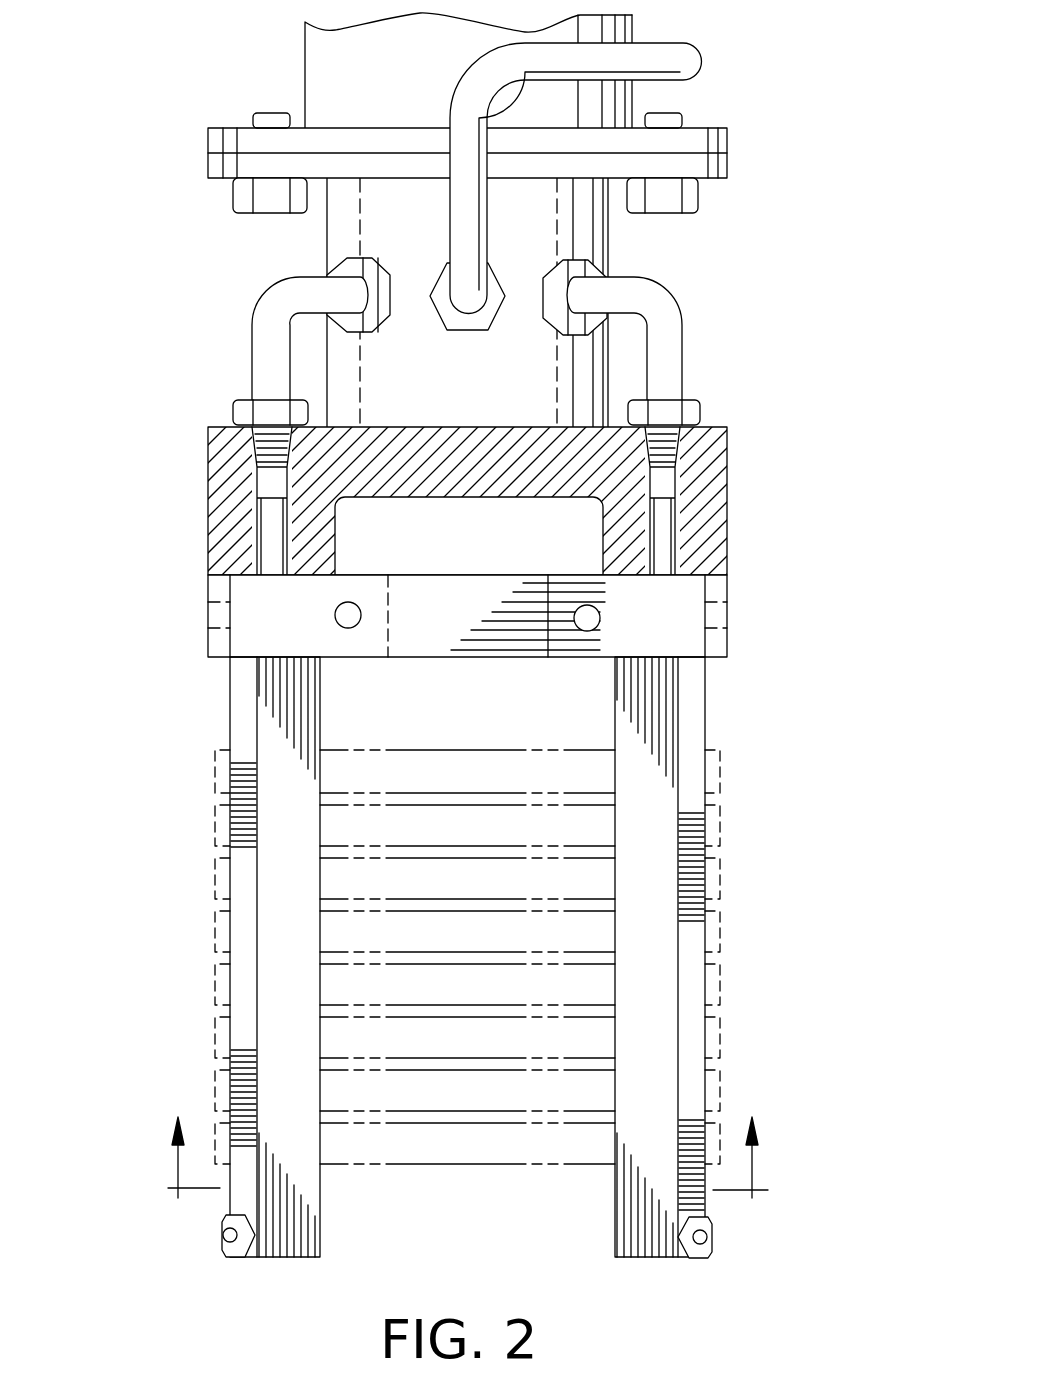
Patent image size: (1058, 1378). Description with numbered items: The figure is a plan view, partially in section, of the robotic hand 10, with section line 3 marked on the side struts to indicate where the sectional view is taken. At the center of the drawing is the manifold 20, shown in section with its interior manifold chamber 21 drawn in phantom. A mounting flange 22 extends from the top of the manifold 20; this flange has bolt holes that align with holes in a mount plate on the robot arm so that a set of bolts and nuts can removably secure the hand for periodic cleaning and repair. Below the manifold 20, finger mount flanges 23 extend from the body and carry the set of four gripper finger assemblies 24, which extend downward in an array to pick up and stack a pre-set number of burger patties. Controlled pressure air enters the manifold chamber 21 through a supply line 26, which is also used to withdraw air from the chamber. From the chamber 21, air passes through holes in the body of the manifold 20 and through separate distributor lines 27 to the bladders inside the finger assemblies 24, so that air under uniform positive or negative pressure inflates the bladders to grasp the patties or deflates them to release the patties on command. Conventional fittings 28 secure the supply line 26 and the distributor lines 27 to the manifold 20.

The robotic hand 10 is at (467, 635).
The manifold 20 is at (217, 453).
The manifold chamber 21 is at (370, 217).
The mounting flange 22 is at (712, 167).
The finger mount flanges 23 is at (697, 635).
The gripper finger assemblies 24 is at (223, 708).
The supply line 26 is at (667, 53).
The distributor lines 27 is at (263, 355).
The fittings 28 is at (590, 270).
The section line 3- 3 is at (468, 1134).